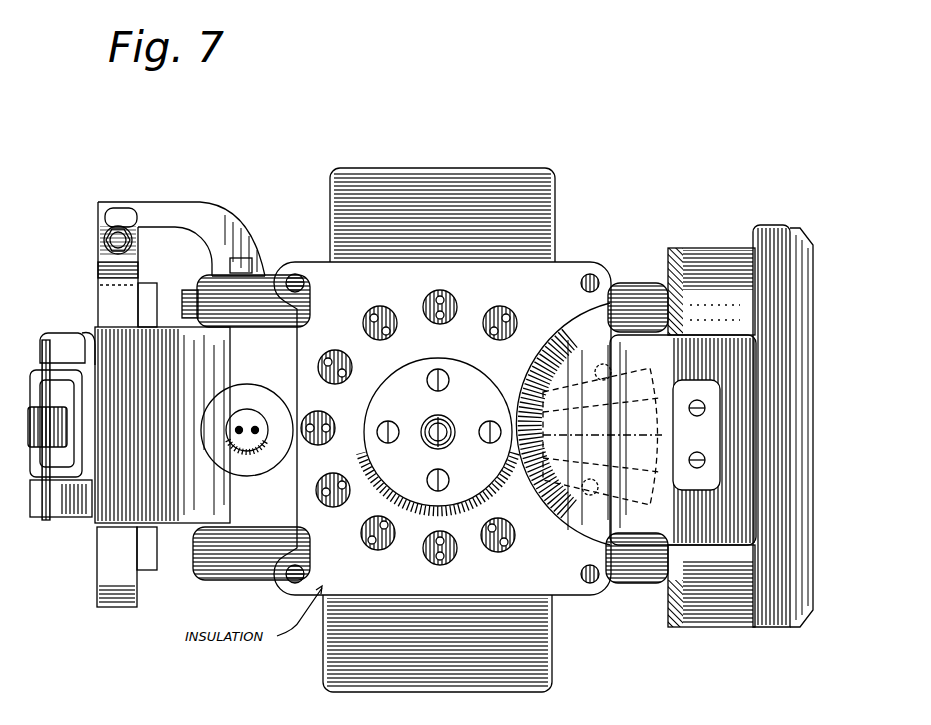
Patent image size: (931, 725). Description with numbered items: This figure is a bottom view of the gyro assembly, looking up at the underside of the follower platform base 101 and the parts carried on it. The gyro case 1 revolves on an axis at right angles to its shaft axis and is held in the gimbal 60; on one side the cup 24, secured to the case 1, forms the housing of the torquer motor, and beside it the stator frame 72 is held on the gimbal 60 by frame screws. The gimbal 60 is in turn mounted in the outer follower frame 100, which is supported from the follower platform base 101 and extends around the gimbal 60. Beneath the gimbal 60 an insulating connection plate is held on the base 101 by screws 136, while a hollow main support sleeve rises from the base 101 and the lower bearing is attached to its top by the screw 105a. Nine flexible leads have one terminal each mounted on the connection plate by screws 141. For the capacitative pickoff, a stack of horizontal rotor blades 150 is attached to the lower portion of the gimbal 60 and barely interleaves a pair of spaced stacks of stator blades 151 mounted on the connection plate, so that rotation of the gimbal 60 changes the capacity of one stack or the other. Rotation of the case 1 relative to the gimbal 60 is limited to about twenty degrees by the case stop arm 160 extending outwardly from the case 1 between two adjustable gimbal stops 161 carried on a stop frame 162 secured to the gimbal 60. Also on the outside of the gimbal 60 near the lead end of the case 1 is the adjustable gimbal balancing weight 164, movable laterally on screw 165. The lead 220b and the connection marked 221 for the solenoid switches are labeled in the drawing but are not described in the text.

The case 1 is at (622, 295).
The cup 24 is at (700, 263).
The gimbal 60 is at (255, 361).
The stator frame 72 is at (773, 236).
The follower frame 100 is at (470, 168).
The follower platform base 101 is at (487, 469).
The screw 105a is at (445, 430).
The screws 136 is at (432, 478).
The screws 141 is at (457, 548).
The rotor blades 150 is at (692, 422).
The stator blades 151 is at (602, 435).
The case stop arm 160 is at (208, 220).
The adjustable gimbal stops 161 is at (138, 190).
The stop frame 162 is at (115, 290).
The adjustable gimbal balancing weight 164 is at (45, 510).
The screw 165 is at (47, 372).
The lead 220b is at (335, 724).
The solenoid switches lead 221 is at (112, 713).